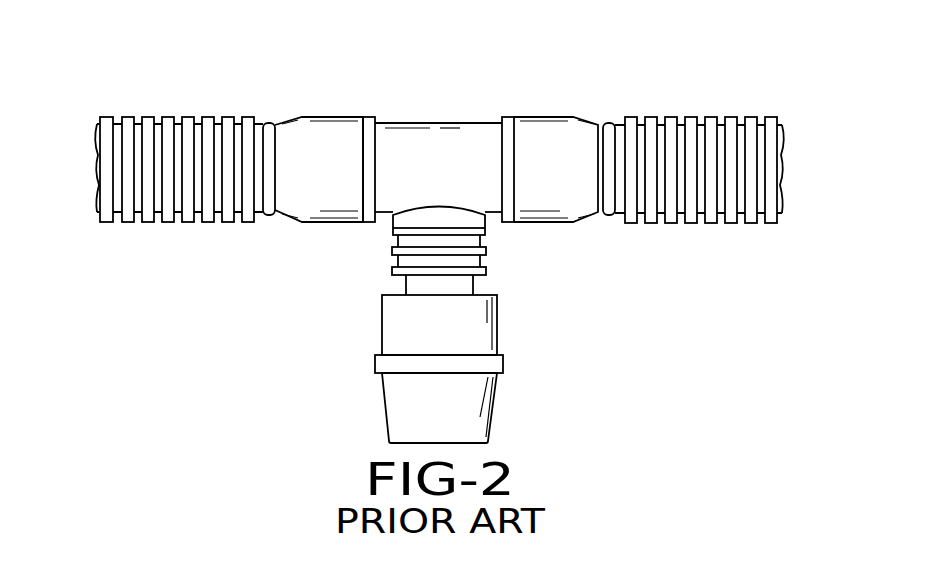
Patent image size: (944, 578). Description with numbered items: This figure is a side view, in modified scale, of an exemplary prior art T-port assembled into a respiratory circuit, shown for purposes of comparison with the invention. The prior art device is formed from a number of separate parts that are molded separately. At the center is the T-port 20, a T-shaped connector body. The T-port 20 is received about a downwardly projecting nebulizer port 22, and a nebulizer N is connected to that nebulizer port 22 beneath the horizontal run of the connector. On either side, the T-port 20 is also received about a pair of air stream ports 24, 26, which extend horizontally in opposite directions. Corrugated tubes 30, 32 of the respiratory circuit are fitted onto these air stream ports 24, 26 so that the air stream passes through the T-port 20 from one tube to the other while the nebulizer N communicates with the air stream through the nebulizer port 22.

The T-port 20 is at (426, 115).
The nebulizer port 22 is at (486, 250).
The air stream port 24 is at (484, 123).
The air stream port 26 is at (390, 123).
The tube 30 is at (168, 117).
The tube 32 is at (668, 117).
The nebulizer N is at (497, 328).